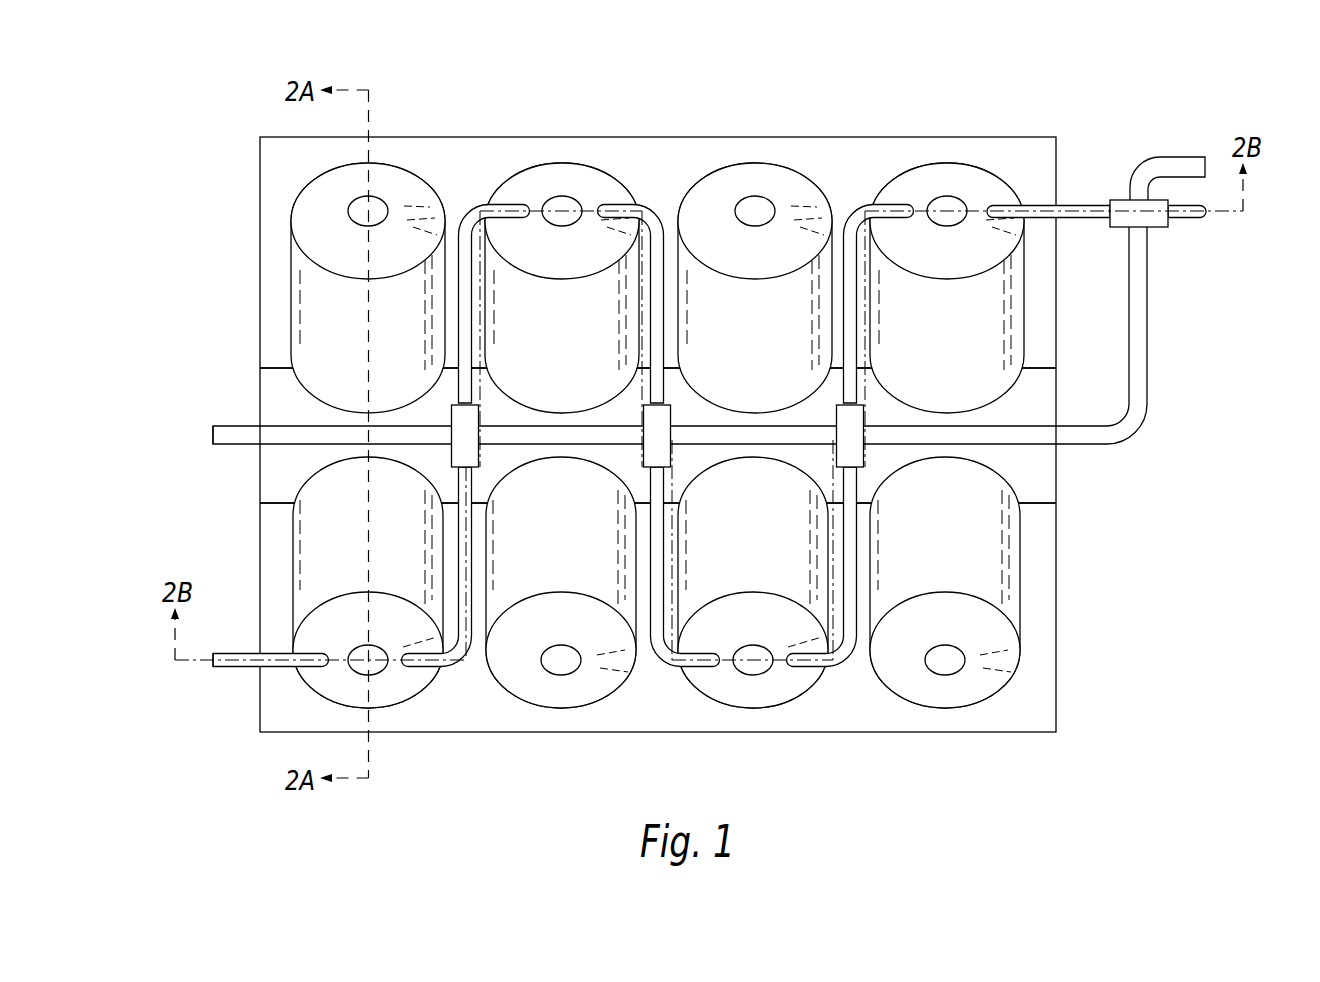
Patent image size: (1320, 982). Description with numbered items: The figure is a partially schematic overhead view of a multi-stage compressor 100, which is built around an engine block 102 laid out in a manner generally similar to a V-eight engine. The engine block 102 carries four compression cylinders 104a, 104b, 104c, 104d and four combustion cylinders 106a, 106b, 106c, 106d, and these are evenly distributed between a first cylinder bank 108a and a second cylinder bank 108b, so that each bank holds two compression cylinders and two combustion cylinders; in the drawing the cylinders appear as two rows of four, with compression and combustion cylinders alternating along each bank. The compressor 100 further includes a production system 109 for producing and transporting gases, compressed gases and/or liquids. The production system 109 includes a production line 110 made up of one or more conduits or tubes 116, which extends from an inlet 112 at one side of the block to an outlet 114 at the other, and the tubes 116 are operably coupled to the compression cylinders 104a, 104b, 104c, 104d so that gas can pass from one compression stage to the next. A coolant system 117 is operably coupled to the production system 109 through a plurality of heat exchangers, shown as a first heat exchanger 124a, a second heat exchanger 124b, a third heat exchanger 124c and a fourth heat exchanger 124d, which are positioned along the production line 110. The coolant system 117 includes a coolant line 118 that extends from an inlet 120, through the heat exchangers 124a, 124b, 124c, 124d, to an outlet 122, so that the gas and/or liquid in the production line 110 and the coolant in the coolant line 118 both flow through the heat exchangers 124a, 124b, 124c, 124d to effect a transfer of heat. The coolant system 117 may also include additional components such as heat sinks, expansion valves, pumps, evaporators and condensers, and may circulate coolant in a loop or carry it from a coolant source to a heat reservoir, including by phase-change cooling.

The multi-stage compressor 100 is at (921, 84).
The engine block 102 is at (1060, 500).
The compression cylinder 104a is at (395, 705).
The compression cylinder 104b is at (595, 165).
The compression cylinder 104c is at (782, 707).
The compression cylinder 104d is at (978, 165).
The combustion cylinder 106a is at (402, 165).
The combustion cylinder 106b is at (590, 705).
The combustion cylinder 106c is at (785, 165).
The combustion cylinder 106d is at (975, 705).
The first cylinder bank 108a is at (1058, 152).
The second cylinder bank 108b is at (1060, 622).
The production system 109 is at (190, 708).
The production line 110 is at (240, 668).
The inlet 112 is at (210, 662).
The outlet 114 is at (1210, 216).
The tube 116 is at (1078, 207).
The coolant system 117 is at (218, 390).
The coolant line 118 is at (230, 447).
The inlet 120 is at (1216, 160).
The outlet 122 is at (213, 432).
The first heat exchanger 124a is at (460, 415).
The second heat exchanger 124b is at (662, 455).
The third heat exchanger 124c is at (857, 422).
The fourth heat exchanger 124d is at (1120, 222).